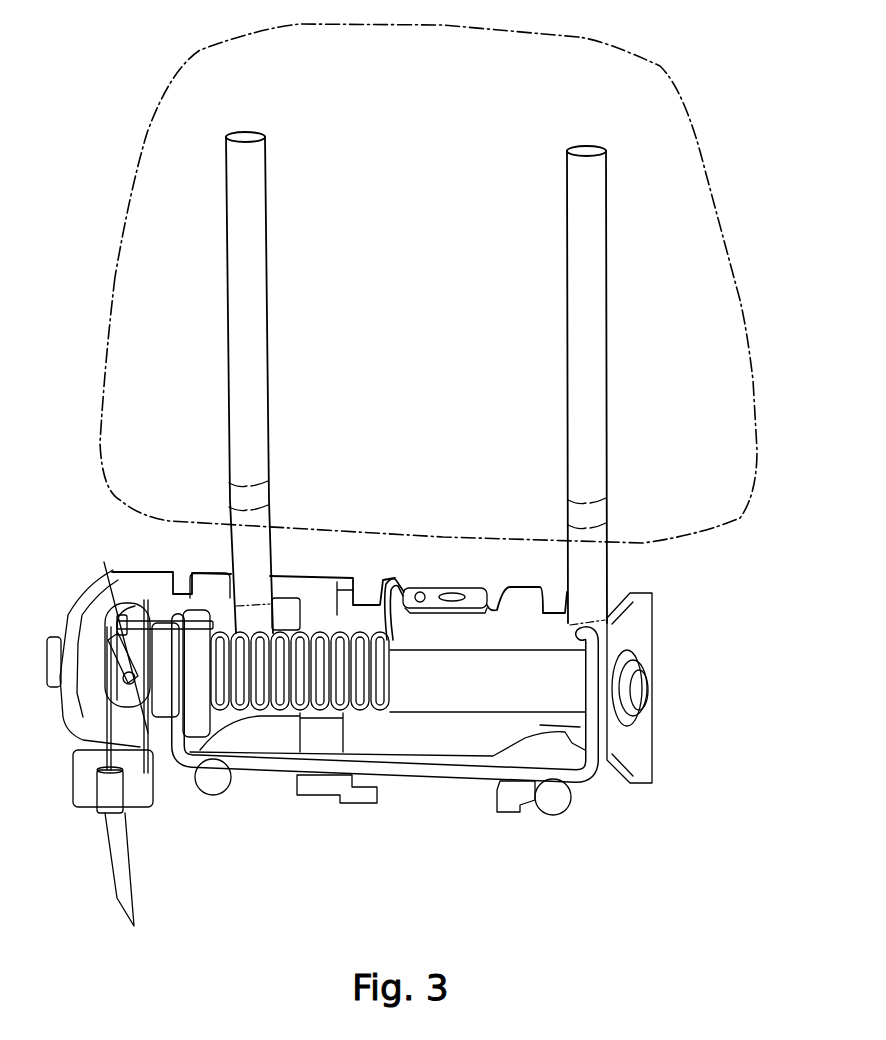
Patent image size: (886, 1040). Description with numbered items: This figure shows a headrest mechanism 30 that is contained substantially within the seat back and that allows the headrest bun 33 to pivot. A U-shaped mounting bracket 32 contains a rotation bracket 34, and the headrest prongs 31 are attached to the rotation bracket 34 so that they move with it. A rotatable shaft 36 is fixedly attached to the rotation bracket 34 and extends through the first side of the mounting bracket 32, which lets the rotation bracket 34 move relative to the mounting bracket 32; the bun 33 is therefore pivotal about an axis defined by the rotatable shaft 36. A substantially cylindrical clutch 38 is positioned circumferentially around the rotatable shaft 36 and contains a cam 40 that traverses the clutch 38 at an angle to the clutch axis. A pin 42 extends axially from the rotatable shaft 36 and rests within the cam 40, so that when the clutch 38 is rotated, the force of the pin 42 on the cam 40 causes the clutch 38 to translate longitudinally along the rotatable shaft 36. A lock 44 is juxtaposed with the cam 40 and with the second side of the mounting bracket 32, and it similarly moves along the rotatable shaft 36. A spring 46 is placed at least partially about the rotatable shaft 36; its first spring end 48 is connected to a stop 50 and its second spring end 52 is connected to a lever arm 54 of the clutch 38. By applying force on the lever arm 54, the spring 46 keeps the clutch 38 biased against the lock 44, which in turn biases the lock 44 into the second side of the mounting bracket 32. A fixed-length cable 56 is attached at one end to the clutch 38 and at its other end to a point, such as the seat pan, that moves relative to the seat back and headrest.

The headrest mechanism 30 is at (692, 296).
The headrest prongs 31 is at (268, 290).
The mounting bracket 32 is at (655, 640).
The bun 33 is at (126, 56).
The rotation bracket 34 is at (283, 770).
The rotatable shaft 36 is at (441, 697).
The clutch 38 is at (113, 573).
The cam 40 is at (144, 597).
The pin 42 is at (160, 740).
The lock 44 is at (73, 660).
The spring 46 is at (322, 618).
The first spring end 48 is at (383, 585).
The stop 50 is at (443, 585).
The second spring end 52 is at (182, 600).
The lever arm 54 is at (158, 600).
The cable 56 is at (117, 897).